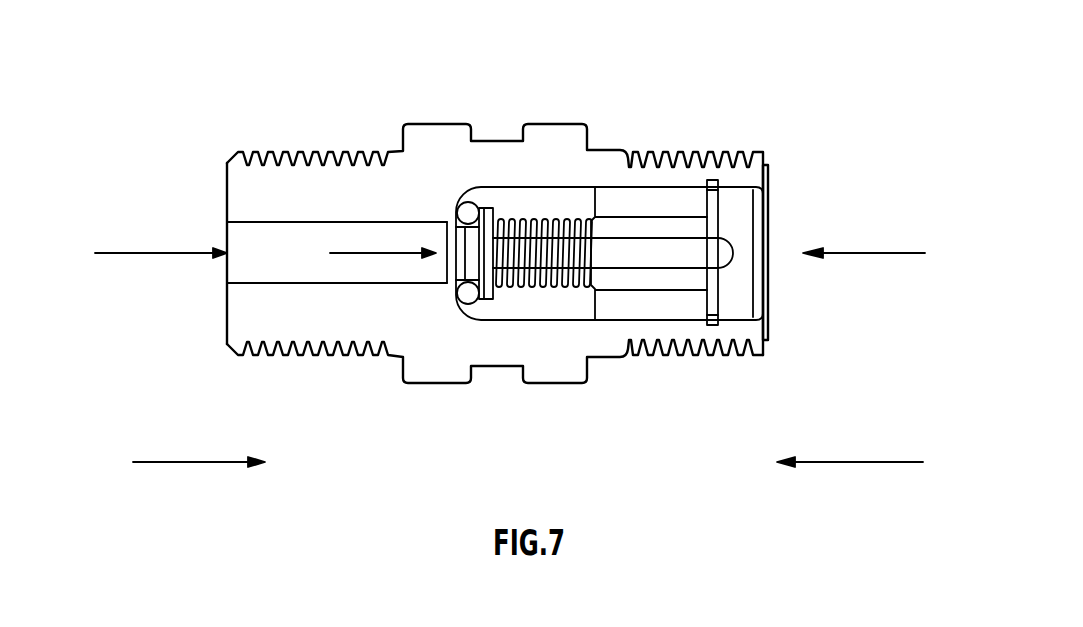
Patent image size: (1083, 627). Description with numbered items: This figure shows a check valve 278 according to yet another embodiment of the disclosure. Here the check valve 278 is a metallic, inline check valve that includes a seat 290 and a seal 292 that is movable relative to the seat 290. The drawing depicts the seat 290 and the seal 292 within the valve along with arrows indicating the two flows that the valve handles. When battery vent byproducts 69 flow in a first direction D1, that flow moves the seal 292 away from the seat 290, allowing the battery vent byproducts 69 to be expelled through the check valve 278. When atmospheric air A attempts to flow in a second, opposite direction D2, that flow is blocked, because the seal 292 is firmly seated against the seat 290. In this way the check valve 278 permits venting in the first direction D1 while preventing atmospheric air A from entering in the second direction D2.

The check valve 278 is at (670, 98).
The seat 290 is at (462, 302).
The seal 292 is at (494, 228).
The battery vent byproducts 69 is at (130, 253).
The atmospheric air A is at (888, 253).
The first direction D1 is at (198, 462).
The second direction D2 is at (852, 462).